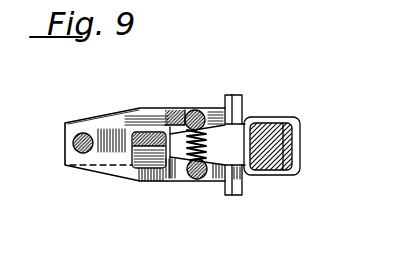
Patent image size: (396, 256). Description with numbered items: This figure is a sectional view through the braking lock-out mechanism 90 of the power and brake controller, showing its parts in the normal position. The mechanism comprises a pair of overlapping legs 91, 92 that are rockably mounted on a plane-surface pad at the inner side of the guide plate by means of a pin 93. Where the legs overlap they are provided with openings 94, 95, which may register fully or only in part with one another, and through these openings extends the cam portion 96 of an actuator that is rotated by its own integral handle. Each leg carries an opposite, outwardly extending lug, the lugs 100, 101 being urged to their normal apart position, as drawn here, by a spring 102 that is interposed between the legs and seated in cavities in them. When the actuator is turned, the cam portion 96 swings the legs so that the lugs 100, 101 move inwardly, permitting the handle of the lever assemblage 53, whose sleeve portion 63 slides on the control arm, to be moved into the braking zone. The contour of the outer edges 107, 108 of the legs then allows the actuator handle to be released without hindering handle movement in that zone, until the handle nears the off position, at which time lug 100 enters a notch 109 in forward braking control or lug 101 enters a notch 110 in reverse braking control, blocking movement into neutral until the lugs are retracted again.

The braking lock-out mechanism 90 is at (157, 183).
The leg 91 is at (166, 113).
The leg 92 is at (178, 181).
The pin 93 is at (74, 141).
The opening 94 is at (138, 141).
The opening 95 is at (144, 182).
The cam portion 96 is at (140, 157).
The lug 100 is at (236, 105).
The lug 101 is at (235, 194).
The spring 102 is at (191, 111).
The outer edge 107 is at (110, 113).
The outer edge 108 is at (99, 172).
The notch 109 is at (294, 174).
The notch 110 is at (294, 118).
The lever assemblage 53 is at (302, 142).
The sleeve portion 63 is at (278, 146).